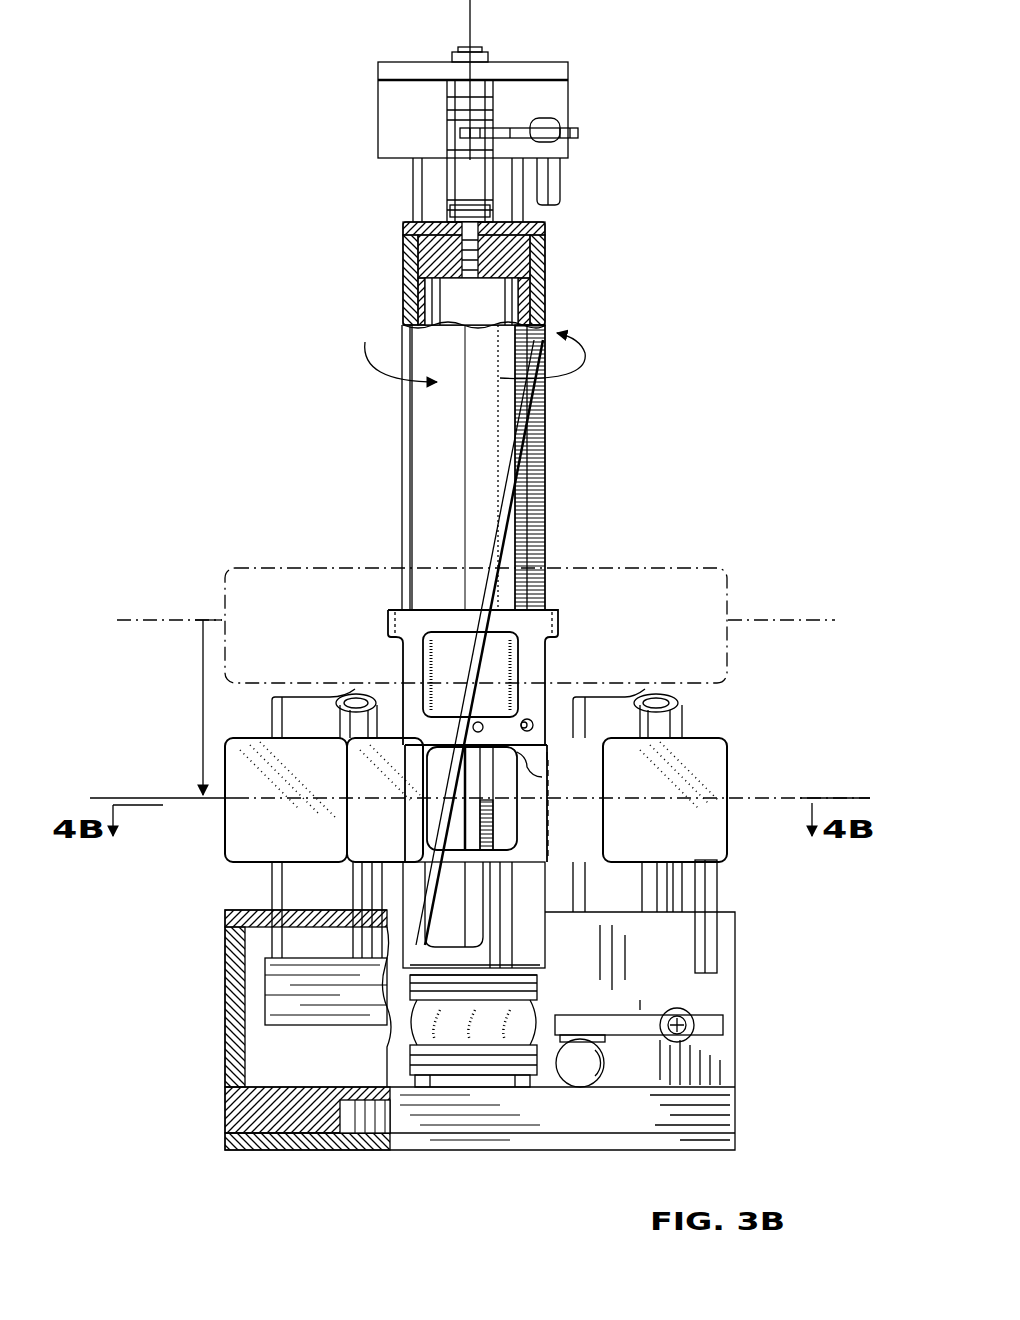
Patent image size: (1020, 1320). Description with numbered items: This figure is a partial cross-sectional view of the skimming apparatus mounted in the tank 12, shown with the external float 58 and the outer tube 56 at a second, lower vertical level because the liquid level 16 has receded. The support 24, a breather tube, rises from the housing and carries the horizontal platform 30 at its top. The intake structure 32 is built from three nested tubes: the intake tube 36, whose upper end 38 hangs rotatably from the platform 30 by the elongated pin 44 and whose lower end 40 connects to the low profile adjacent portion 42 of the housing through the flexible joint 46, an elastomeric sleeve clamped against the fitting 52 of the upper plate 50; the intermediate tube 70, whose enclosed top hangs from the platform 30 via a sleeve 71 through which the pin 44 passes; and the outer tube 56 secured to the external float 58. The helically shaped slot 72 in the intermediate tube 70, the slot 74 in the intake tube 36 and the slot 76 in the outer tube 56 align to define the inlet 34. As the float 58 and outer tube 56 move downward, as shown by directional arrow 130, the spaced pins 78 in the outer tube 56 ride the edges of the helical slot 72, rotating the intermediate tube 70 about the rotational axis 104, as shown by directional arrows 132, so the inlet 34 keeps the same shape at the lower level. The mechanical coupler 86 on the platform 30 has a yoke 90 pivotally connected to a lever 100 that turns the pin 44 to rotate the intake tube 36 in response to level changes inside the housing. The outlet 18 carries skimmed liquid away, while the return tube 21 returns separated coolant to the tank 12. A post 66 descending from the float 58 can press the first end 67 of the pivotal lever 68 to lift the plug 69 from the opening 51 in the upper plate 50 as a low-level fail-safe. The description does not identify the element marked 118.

The rotational axis 104 is at (473, 20).
The horizontal platform 30 is at (570, 92).
The yoke 90 is at (540, 118).
The lever 100 is at (580, 133).
The mechanical coupler 86 is at (562, 180).
The sleeve 71 is at (447, 185).
The support 24 is at (413, 212).
The upper end 38 is at (403, 247).
The elongated pin 44 is at (545, 250).
The intake tube 36 is at (410, 295).
The directional arrows 132 is at (580, 368).
The intermediate tube 70 is at (435, 458).
The tank 12 is at (696, 478).
The intake structure 32 is at (397, 502).
The helically shaped slot 72 is at (505, 580).
The external float 58 is at (735, 568).
The liquid level 16 is at (800, 620).
The outer tube 56 is at (386, 615).
The directional arrow 130 is at (203, 710).
The outlet 18 is at (270, 718).
The spaced pins 78 is at (473, 727).
The return tube 21 is at (682, 715).
The slot 76 is at (520, 758).
The inlet 34 is at (430, 832).
The slot 74 is at (495, 832).
The post 66 is at (717, 900).
The lower end 40 is at (545, 962).
The block 118 is at (265, 975).
The flexible joint 46 is at (535, 1008).
The pivotal lever 68 is at (632, 1020).
The first end 67 is at (723, 1025).
The fitting 52 is at (488, 1087).
The plug 69 is at (578, 1075).
The low profile adjacent portion 42 is at (740, 1125).
The opening 51 is at (360, 1130).
The upper plate 50 is at (480, 1130).